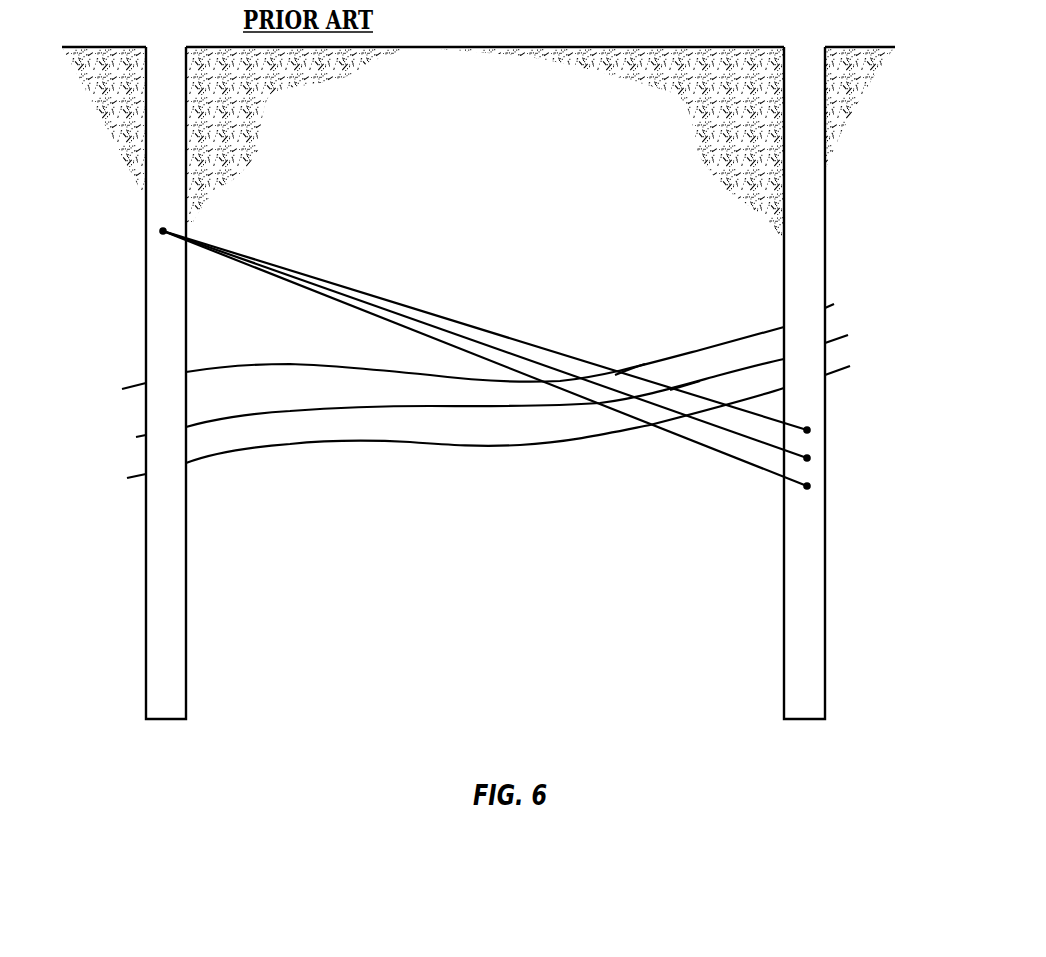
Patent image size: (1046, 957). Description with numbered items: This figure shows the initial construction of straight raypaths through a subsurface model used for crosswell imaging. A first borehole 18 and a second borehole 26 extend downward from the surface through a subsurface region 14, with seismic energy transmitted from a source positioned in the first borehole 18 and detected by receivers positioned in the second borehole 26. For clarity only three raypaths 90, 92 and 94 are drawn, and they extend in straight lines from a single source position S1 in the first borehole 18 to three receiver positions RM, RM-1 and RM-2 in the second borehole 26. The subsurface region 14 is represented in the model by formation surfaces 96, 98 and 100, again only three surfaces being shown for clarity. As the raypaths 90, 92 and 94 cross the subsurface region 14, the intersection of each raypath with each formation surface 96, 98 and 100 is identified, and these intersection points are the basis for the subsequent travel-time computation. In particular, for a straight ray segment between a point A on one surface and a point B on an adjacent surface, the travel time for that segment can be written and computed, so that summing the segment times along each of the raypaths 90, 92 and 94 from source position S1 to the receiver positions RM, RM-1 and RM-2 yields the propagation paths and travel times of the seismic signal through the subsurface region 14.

The subsurface region 14 is at (489, 163).
The first borehole 18 is at (183, 141).
The second borehole 26 is at (781, 258).
The raypath 90 is at (383, 318).
The raypath 92 is at (492, 348).
The raypath 94 is at (447, 318).
The formation surface 96 is at (218, 367).
The formation surface 98 is at (263, 412).
The formation surface 100 is at (340, 436).
The point A is at (625, 372).
The point B is at (682, 392).
The source position S1 is at (163, 231).
The receiver position RM-2 is at (807, 430).
The receiver position RM-1 is at (807, 458).
The receiver position RM is at (807, 486).